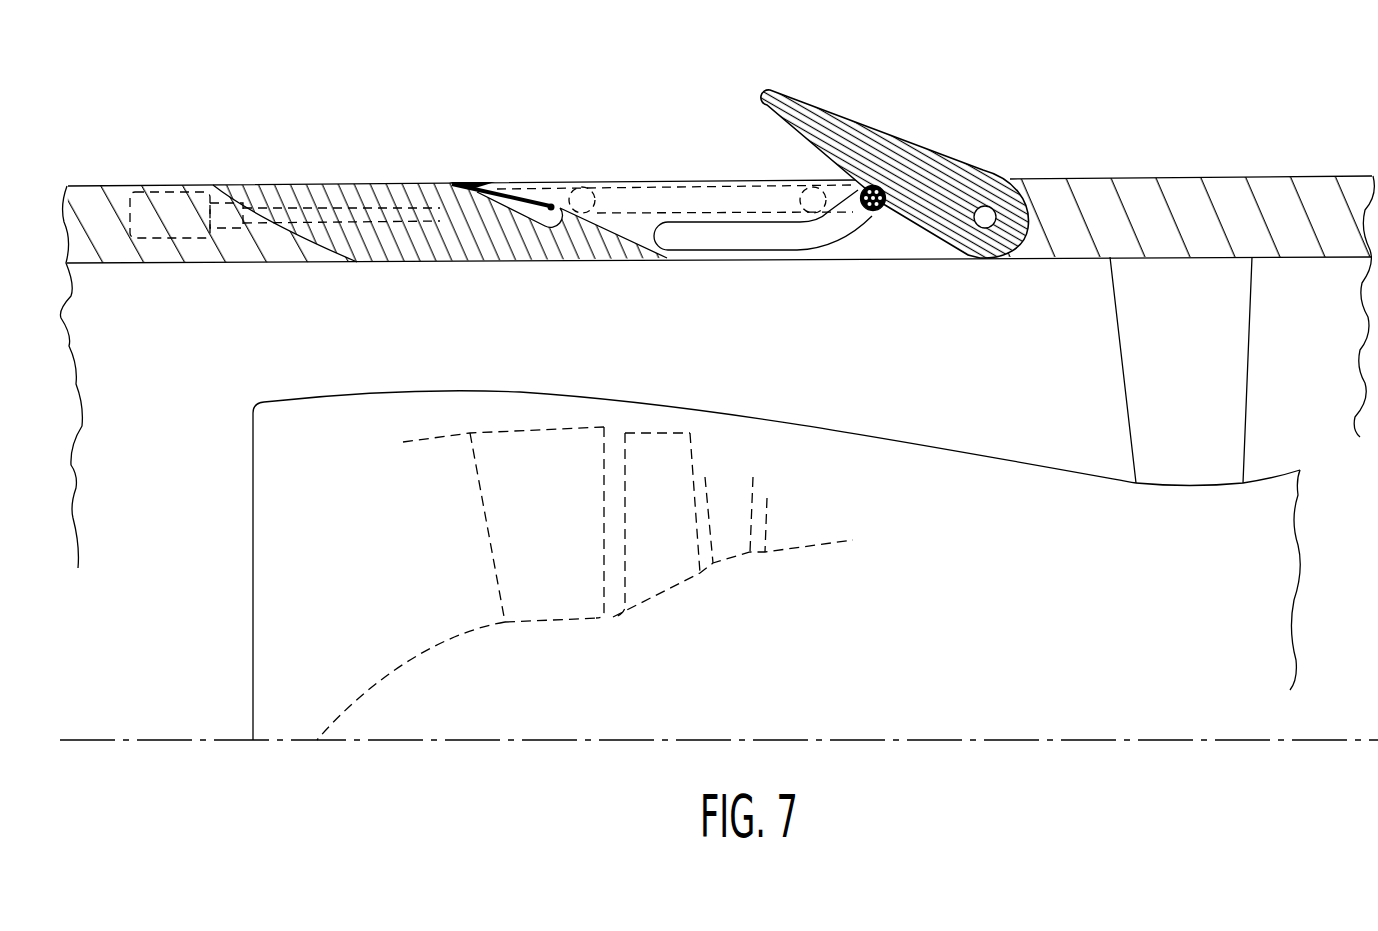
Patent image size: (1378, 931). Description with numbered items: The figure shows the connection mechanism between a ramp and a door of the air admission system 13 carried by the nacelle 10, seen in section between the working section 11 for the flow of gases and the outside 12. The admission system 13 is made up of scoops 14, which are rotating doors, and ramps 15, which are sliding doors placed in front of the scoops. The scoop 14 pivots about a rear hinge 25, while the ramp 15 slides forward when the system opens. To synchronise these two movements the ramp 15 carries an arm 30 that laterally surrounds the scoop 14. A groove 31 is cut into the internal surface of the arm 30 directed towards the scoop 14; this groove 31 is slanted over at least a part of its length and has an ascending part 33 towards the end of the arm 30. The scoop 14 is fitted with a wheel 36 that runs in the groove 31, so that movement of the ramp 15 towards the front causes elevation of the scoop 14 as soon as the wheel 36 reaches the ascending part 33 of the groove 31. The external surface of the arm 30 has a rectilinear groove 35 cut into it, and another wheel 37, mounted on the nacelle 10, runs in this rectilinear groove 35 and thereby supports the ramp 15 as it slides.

The nacelle 10 is at (86, 210).
The working section 11 is at (433, 346).
The outside 12 is at (1058, 58).
The air admission system 13 is at (368, 132).
The scoop 14 is at (873, 138).
The ramp 15 is at (338, 190).
The rear hinge 25 is at (985, 216).
The arm 30 is at (682, 183).
The groove 31 is at (703, 253).
The ascending part 33 is at (727, 238).
The rectilinear groove 35 is at (627, 190).
The wheel 36 is at (873, 212).
The wheel 37 is at (540, 187).